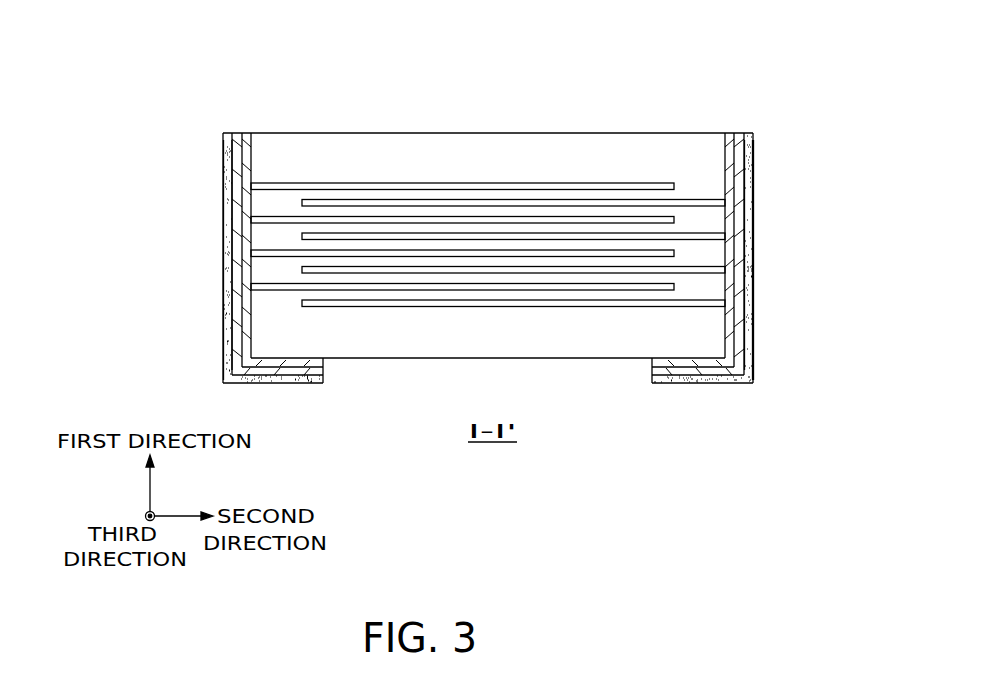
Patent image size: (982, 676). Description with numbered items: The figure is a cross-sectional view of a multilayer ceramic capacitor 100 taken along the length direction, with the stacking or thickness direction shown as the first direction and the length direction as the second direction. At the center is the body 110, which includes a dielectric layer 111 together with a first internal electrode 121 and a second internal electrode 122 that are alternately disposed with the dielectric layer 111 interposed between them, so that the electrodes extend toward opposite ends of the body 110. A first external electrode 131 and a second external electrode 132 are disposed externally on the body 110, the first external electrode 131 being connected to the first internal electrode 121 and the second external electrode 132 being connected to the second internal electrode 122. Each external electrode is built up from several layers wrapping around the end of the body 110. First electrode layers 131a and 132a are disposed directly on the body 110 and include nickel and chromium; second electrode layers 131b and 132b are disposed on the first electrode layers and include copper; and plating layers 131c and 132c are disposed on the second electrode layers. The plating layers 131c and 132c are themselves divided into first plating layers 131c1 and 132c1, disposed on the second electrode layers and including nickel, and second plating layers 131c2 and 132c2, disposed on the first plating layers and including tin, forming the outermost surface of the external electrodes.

The multilayer ceramic capacitor 100 is at (227, 28).
The body 110 is at (567, 133).
The dielectric layer 111 is at (368, 195).
The first internal electrode 121 is at (437, 187).
The second internal electrode 122 is at (495, 202).
The first external electrode 131 is at (72, 210).
The first electrode layer 131a is at (243, 280).
The second electrode layer 131b is at (243, 253).
The plating layer 131c is at (137, 198).
The first plating layer 131c1 is at (235, 228).
The second plating layer 131c2 is at (227, 203).
The second external electrode 132 is at (780, 38).
The first electrode layer 132a is at (730, 133).
The second electrode layer 132b is at (736, 133).
The plating layer 132c is at (813, 74).
The first plating layer 132c1 is at (738, 133).
The second plating layer 132c2 is at (753, 147).